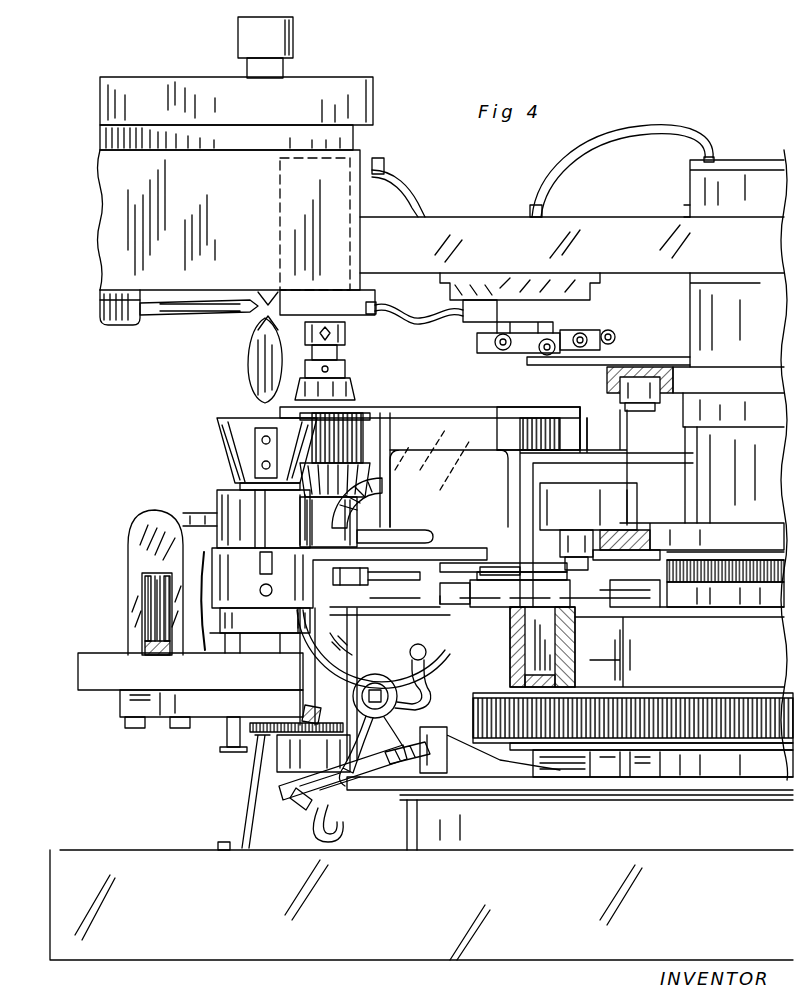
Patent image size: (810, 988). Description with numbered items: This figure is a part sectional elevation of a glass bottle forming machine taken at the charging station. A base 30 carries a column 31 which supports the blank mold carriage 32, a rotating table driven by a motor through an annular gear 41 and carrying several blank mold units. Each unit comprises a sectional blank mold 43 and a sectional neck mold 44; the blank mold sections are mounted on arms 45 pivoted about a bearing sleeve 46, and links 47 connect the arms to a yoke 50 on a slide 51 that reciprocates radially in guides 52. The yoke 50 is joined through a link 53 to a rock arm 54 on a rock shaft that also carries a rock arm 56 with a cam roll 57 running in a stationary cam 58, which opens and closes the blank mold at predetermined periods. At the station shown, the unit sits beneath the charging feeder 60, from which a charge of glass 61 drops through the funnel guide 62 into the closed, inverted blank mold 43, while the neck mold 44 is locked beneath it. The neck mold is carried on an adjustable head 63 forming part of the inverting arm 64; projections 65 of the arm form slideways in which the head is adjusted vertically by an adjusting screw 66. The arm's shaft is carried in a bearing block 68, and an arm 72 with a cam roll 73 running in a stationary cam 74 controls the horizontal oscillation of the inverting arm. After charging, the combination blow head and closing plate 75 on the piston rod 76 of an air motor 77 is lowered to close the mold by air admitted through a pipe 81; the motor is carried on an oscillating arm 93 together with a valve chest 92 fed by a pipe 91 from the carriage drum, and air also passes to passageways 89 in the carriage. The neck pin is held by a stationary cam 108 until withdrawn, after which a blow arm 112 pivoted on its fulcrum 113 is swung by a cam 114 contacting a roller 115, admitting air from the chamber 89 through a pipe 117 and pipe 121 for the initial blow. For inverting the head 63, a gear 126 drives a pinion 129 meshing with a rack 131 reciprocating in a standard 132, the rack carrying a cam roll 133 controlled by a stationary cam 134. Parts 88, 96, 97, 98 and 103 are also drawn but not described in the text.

The base 30 is at (258, 958).
The column 31 is at (768, 150).
The blank mold carriage 32 is at (500, 610).
The annular gear 41 is at (472, 706).
The blank mold 43 is at (212, 497).
The neck mold 44 is at (263, 652).
The arms 45 is at (344, 599).
The bearing sleeve 46 is at (428, 532).
The links 47 is at (336, 572).
The yoke 50 is at (445, 563).
The slide 51 is at (452, 607).
The guides 52 is at (650, 598).
The link 53 is at (505, 567).
The rock arm 54 is at (560, 535).
The rock arm 56 is at (665, 553).
The cam roll 57 is at (610, 532).
The stationary cam 58 is at (740, 530).
The charging feeder 60 is at (123, 230).
The charge of glass 61 is at (258, 352).
The funnel guide 62 is at (225, 432).
The adjustable head 63 is at (80, 669).
The inverting arm 64 is at (140, 520).
The projections 65 is at (175, 620).
The adjusting screw 66 is at (148, 593).
The bearing block 68 is at (378, 506).
The arm 72 is at (280, 760).
The cam roll 73 is at (380, 782).
The stationary cam 74 is at (565, 800).
The combination blow head and closing plate 75 is at (352, 382).
The piston rod 76 is at (347, 348).
The air motor 77 is at (380, 162).
The pipe 81 is at (423, 190).
The hose 88 is at (418, 316).
The passageways 89 is at (542, 647).
The pipe 91 is at (655, 135).
The valve chest 92 is at (588, 275).
The oscillating arm 93 is at (470, 232).
The valve 96 is at (520, 356).
The valve stem 97 is at (582, 333).
The valve stem 98 is at (613, 332).
The plate 103 is at (648, 356).
The stationary cam 108 is at (450, 735).
The blow arm 112 is at (300, 808).
The fulcrum 113 is at (380, 678).
The cam 114 is at (465, 790).
The roller 115 is at (420, 790).
The pipe 117 is at (435, 670).
The pipe 121 is at (335, 836).
The gear 126 is at (357, 482).
The pinion 129 is at (378, 415).
The rack 131 is at (548, 410).
The standard 132 is at (432, 416).
The cam roll 133 is at (615, 388).
The stationary cam 134 is at (724, 375).